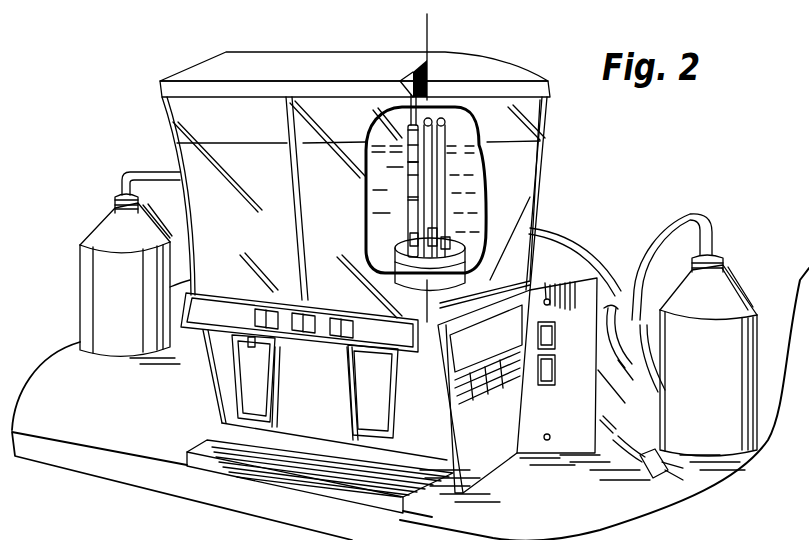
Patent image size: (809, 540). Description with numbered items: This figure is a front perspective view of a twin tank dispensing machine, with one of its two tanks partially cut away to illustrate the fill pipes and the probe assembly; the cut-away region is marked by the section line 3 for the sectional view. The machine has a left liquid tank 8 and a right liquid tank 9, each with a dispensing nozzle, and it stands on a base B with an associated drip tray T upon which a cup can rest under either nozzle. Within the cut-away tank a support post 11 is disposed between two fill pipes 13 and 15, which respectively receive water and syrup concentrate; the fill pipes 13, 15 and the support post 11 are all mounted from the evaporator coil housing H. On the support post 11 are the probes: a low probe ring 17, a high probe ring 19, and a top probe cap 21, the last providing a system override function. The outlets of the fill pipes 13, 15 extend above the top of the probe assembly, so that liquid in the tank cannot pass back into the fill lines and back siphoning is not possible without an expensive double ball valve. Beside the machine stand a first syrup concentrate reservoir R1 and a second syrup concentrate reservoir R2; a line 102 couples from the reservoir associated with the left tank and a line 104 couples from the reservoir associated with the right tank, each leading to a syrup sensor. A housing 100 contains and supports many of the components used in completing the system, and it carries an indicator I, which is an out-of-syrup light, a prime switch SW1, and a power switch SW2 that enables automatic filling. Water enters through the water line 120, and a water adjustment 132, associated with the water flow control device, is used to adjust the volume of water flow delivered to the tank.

The section line for FIG. 3 is at (420, 28).
The left liquid tank 8 is at (171, 135).
The right liquid tank 9 is at (545, 166).
The support post 11 is at (408, 195).
The fill pipe 13 is at (550, 143).
The fill pipe 15 is at (500, 202).
The low probe ring 17 is at (417, 161).
The high probe ring 19 is at (413, 130).
The top probe cap 21 is at (410, 120).
The evaporator coil housing H is at (395, 253).
The base B is at (208, 382).
The drip tray T is at (191, 446).
The first syrup concentrate reservoir R1 is at (84, 277).
The second syrup concentrate reservoir R2 is at (735, 290).
The housing 100 is at (570, 273).
The line 102 is at (592, 250).
The line 104 is at (610, 408).
The water line 120 is at (606, 376).
The water adjustment 132 is at (549, 440).
The indicator I is at (546, 292).
The prime switch SW1 is at (556, 332).
The power switch SW2 is at (556, 366).